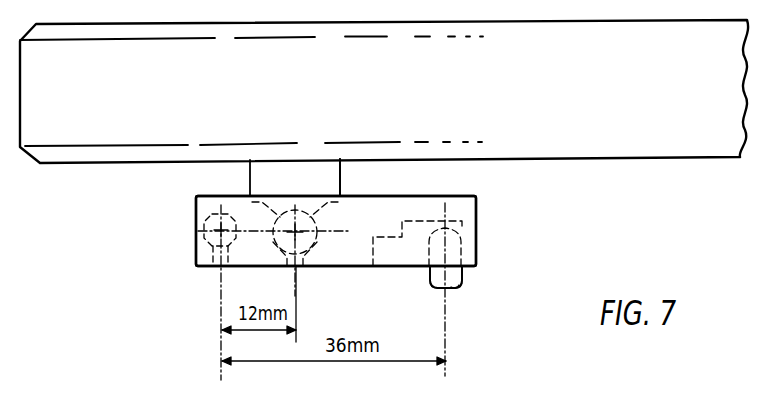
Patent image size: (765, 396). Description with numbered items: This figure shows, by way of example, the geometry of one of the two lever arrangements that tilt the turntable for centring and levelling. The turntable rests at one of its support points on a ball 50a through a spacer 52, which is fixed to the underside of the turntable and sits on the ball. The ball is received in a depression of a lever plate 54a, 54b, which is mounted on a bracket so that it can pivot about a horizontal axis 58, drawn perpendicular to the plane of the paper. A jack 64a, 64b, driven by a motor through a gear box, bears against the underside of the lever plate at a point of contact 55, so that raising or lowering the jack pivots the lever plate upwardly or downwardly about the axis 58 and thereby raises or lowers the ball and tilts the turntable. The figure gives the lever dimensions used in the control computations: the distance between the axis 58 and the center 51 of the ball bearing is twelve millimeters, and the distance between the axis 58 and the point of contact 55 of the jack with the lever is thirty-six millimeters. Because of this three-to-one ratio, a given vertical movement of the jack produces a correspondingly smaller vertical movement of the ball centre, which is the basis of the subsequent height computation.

The ball 50a is at (307, 212).
The center of the ball bearing 51 is at (291, 226).
The spacer 52 is at (265, 172).
The lever plate 54a is at (466, 205).
The lever plate 54b is at (336, 231).
The point of contact 55 is at (443, 230).
The horizontal axis 58 is at (217, 226).
The jack 64a is at (462, 279).
The jack 64b is at (446, 277).